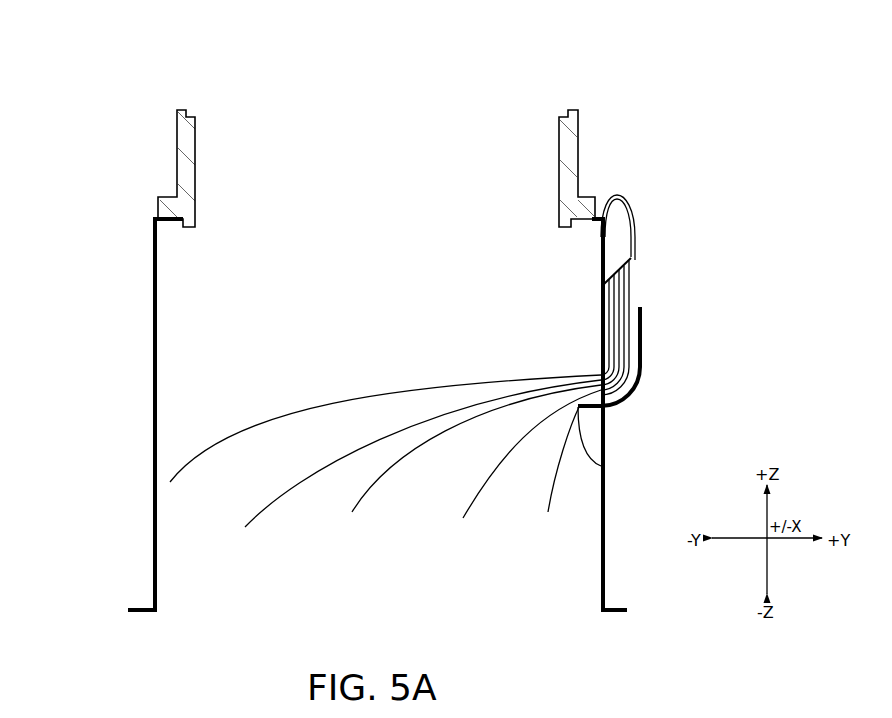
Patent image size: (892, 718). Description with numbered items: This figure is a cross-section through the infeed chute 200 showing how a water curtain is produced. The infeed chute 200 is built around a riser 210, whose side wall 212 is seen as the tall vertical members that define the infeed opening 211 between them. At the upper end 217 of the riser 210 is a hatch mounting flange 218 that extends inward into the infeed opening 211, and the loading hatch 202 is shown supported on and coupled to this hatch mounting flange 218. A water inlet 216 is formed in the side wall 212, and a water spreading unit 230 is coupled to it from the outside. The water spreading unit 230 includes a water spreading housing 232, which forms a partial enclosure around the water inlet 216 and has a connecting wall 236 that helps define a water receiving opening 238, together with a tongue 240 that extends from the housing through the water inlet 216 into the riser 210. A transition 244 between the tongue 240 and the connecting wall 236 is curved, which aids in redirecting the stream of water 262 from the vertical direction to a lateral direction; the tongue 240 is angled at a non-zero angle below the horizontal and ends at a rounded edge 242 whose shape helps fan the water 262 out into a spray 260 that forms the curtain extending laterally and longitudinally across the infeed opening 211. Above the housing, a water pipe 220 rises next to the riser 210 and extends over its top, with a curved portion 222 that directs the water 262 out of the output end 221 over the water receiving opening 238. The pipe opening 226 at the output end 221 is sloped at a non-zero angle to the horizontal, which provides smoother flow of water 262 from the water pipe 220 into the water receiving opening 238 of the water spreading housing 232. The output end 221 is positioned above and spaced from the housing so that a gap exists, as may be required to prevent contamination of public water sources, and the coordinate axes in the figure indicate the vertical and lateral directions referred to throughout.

The infeed chute 200 is at (132, 108).
The loading hatch 202 is at (165, 162).
The riser 210 is at (138, 486).
The infeed opening 211 is at (293, 250).
The side wall 212 is at (600, 260).
The water inlet 216 is at (602, 343).
The upper end 217 is at (143, 228).
The hatch mounting flange 218 is at (168, 226).
The water pipe 220 is at (640, 208).
The output end 221 is at (640, 216).
The curved portion 222 is at (618, 197).
The pipe opening 226 is at (632, 259).
The water spreading unit 230 is at (705, 313).
The water spreading housing 232 is at (700, 358).
The connecting wall 236 is at (645, 326).
The water receiving opening 238 is at (637, 303).
The tongue 240 is at (613, 400).
The edge 242 is at (600, 466).
The transition 244 is at (640, 380).
The spray of water 260 is at (303, 392).
The water 262 is at (607, 318).